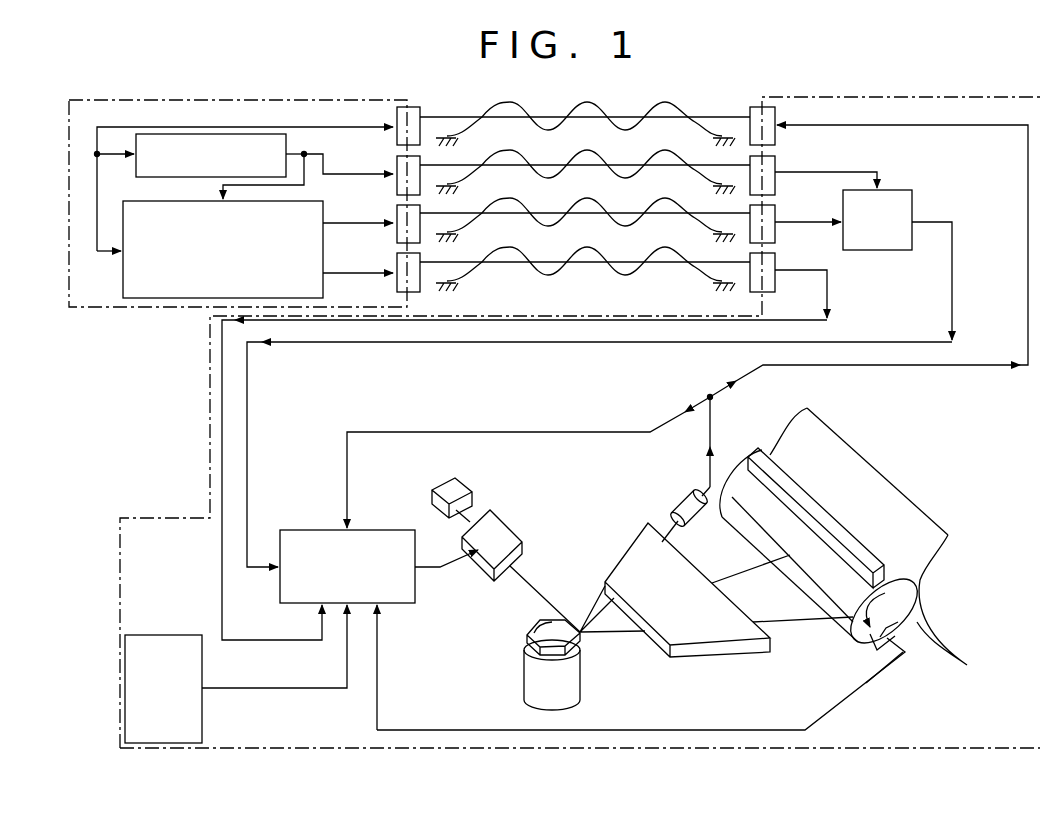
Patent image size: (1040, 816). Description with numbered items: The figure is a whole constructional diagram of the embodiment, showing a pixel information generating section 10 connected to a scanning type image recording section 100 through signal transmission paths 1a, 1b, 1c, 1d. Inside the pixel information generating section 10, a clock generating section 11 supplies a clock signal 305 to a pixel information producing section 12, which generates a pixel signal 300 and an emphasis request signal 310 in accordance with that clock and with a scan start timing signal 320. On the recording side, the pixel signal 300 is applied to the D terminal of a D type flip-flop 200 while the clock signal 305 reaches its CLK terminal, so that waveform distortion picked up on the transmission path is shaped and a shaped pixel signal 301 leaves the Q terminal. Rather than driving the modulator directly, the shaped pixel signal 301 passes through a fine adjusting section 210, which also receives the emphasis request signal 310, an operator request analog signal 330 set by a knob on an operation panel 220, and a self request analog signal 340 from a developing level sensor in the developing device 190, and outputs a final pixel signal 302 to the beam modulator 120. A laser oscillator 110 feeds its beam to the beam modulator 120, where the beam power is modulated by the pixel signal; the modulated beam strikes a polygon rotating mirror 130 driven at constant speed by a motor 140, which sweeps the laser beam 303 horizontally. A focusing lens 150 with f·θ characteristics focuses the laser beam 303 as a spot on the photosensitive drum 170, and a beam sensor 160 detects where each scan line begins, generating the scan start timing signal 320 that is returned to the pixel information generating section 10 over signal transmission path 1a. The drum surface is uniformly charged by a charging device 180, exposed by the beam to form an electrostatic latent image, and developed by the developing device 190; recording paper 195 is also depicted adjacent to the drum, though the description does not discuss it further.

The pixel information generating section 10 is at (68, 134).
The clock generating section 11 is at (135, 160).
The pixel information producing section 12 is at (122, 272).
The clock signal 305 is at (351, 173).
The pixel signal 300 is at (351, 221).
The emphasis request signal 310 is at (351, 271).
The signal transmission path 1a is at (588, 118).
The signal transmission path 1b is at (585, 173).
The signal transmission path 1c is at (585, 221).
The signal transmission path 1d is at (585, 286).
The D type flip-flop 200 is at (873, 252).
The shaped pixel signal 301 is at (935, 218).
The scanning type image recording section 100 is at (210, 368).
The scan start timing signal 320 is at (727, 390).
The fine adjusting section 210 is at (299, 529).
The operation panel 220 is at (157, 634).
The operator request analog signal 330 is at (261, 687).
The self request analog signal 340 is at (418, 729).
The final pixel signal 302 is at (436, 568).
The laser oscillator 110 is at (458, 480).
The beam modulator 120 is at (510, 522).
The polygon rotating mirror 130 is at (530, 628).
The motor 140 is at (524, 672).
The laser beam 303 is at (618, 631).
The focusing lens 150 is at (718, 652).
The beam sensor 160 is at (684, 498).
The photosensitive drum 170 is at (913, 600).
The charging device 180 is at (765, 450).
The developing device 190 is at (875, 648).
The recording paper 195 is at (882, 463).